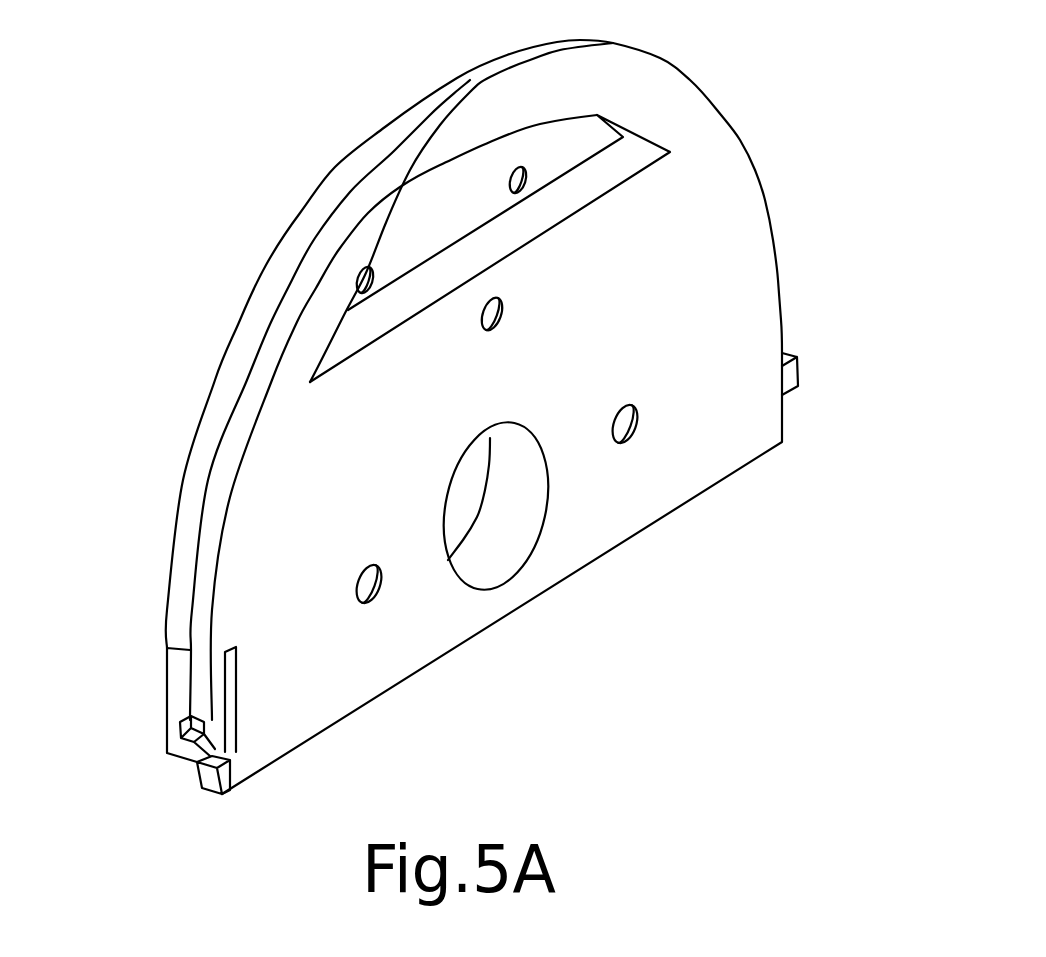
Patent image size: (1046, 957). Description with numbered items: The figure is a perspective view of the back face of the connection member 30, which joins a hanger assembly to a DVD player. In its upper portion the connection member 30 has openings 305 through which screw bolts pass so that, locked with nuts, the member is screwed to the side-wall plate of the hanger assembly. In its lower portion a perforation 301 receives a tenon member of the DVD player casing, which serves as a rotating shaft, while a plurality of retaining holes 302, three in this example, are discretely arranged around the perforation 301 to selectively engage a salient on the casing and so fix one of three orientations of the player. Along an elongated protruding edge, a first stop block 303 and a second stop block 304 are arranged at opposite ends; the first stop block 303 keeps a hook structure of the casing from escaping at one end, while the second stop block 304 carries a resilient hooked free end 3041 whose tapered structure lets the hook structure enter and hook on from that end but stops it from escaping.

The connection member 30 is at (307, 203).
The perforation 301 is at (465, 498).
The retaining holes 302 is at (503, 316).
The first stop block 303 is at (790, 372).
The second stop block 304 is at (188, 752).
The resilient hooked free end 3041 is at (187, 720).
The openings 305 is at (518, 167).